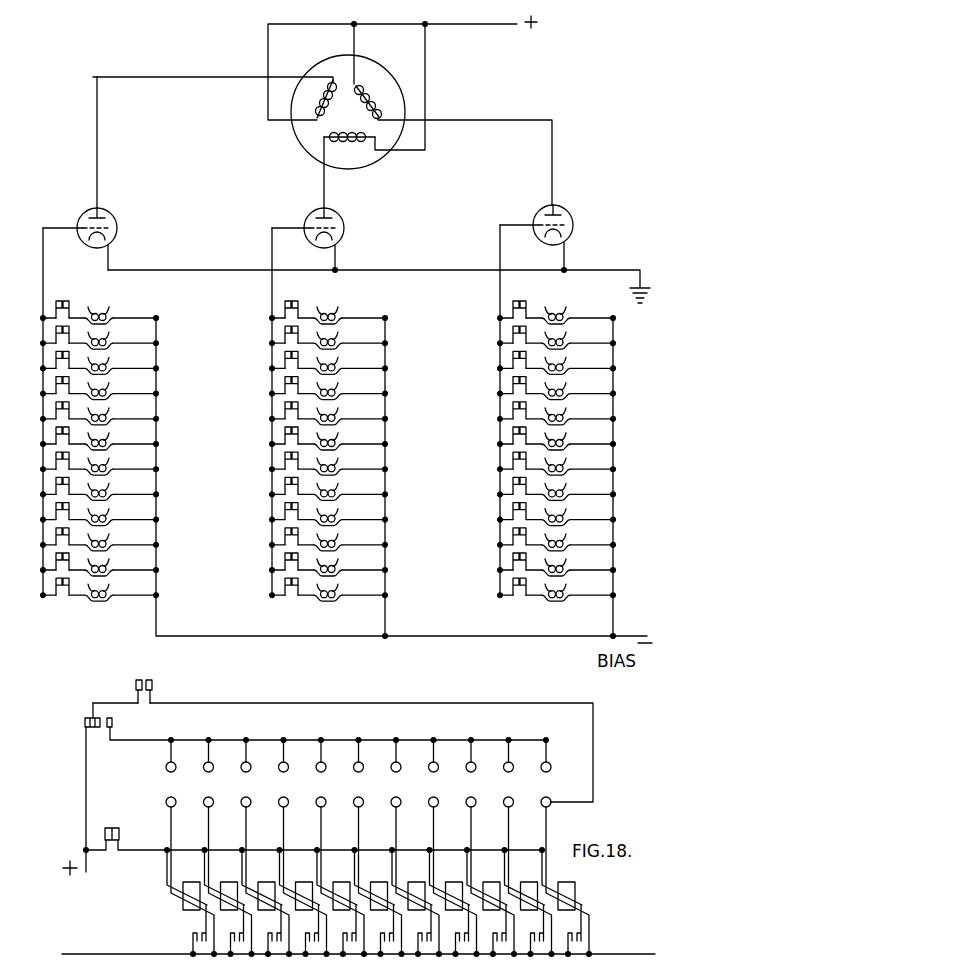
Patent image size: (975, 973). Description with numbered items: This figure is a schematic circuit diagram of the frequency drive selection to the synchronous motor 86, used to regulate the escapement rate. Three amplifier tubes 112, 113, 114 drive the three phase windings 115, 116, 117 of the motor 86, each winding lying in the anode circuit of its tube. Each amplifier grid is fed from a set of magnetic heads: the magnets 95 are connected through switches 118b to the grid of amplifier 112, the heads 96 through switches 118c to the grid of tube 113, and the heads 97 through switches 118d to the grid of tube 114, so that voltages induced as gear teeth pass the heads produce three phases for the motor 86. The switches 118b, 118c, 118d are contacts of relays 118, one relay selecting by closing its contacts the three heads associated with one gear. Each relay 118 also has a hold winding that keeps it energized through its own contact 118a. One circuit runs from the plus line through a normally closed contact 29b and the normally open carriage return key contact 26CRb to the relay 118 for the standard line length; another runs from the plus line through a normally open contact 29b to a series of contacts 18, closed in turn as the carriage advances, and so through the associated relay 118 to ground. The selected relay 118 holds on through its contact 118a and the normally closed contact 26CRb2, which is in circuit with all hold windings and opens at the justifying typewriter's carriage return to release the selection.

The synchronous motor 86 is at (290, 166).
The first phase winding 115 is at (322, 80).
The second phase winding 116 is at (365, 134).
The third phase winding 117 is at (386, 90).
The amplifier tube 112 is at (82, 212).
The amplifier tube 113 is at (309, 212).
The amplifier tube 114 is at (538, 214).
The relay contact 118b is at (64, 598).
The magnetic head 95 is at (104, 600).
The relay contact 118c is at (293, 598).
The magnetic head 96 is at (331, 600).
The relay contact 118d is at (521, 598).
The magnetic head 97 is at (560, 600).
The carriage return key contact 26CRb is at (142, 678).
The relay contact 29b is at (101, 730).
The normally closed carriage return contact 26CRb2 is at (132, 828).
The carriage position contacts 18 is at (167, 803).
The relay 118 is at (182, 904).
The relay hold contact 118a is at (192, 940).